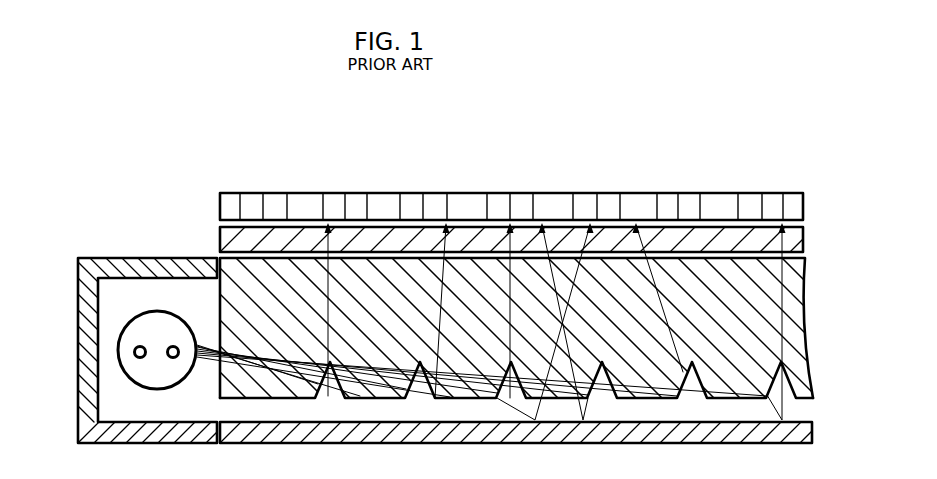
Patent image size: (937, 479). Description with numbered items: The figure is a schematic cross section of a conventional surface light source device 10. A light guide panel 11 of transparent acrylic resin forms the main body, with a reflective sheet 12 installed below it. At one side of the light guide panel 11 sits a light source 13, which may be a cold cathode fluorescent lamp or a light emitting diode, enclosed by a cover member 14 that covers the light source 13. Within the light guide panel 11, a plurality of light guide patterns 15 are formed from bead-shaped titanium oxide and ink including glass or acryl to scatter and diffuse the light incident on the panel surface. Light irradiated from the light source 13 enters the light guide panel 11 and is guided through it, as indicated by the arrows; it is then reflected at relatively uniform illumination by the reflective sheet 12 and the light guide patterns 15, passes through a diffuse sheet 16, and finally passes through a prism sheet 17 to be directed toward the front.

The surface light source device 10 is at (822, 158).
The light guide panel 11 is at (808, 318).
The reflective sheet 12 is at (802, 433).
The light source 13 is at (155, 310).
The cover member 14 is at (78, 352).
The light guide patterns 15 is at (793, 382).
The diffuse sheet 16 is at (798, 240).
The prism sheet 17 is at (798, 205).